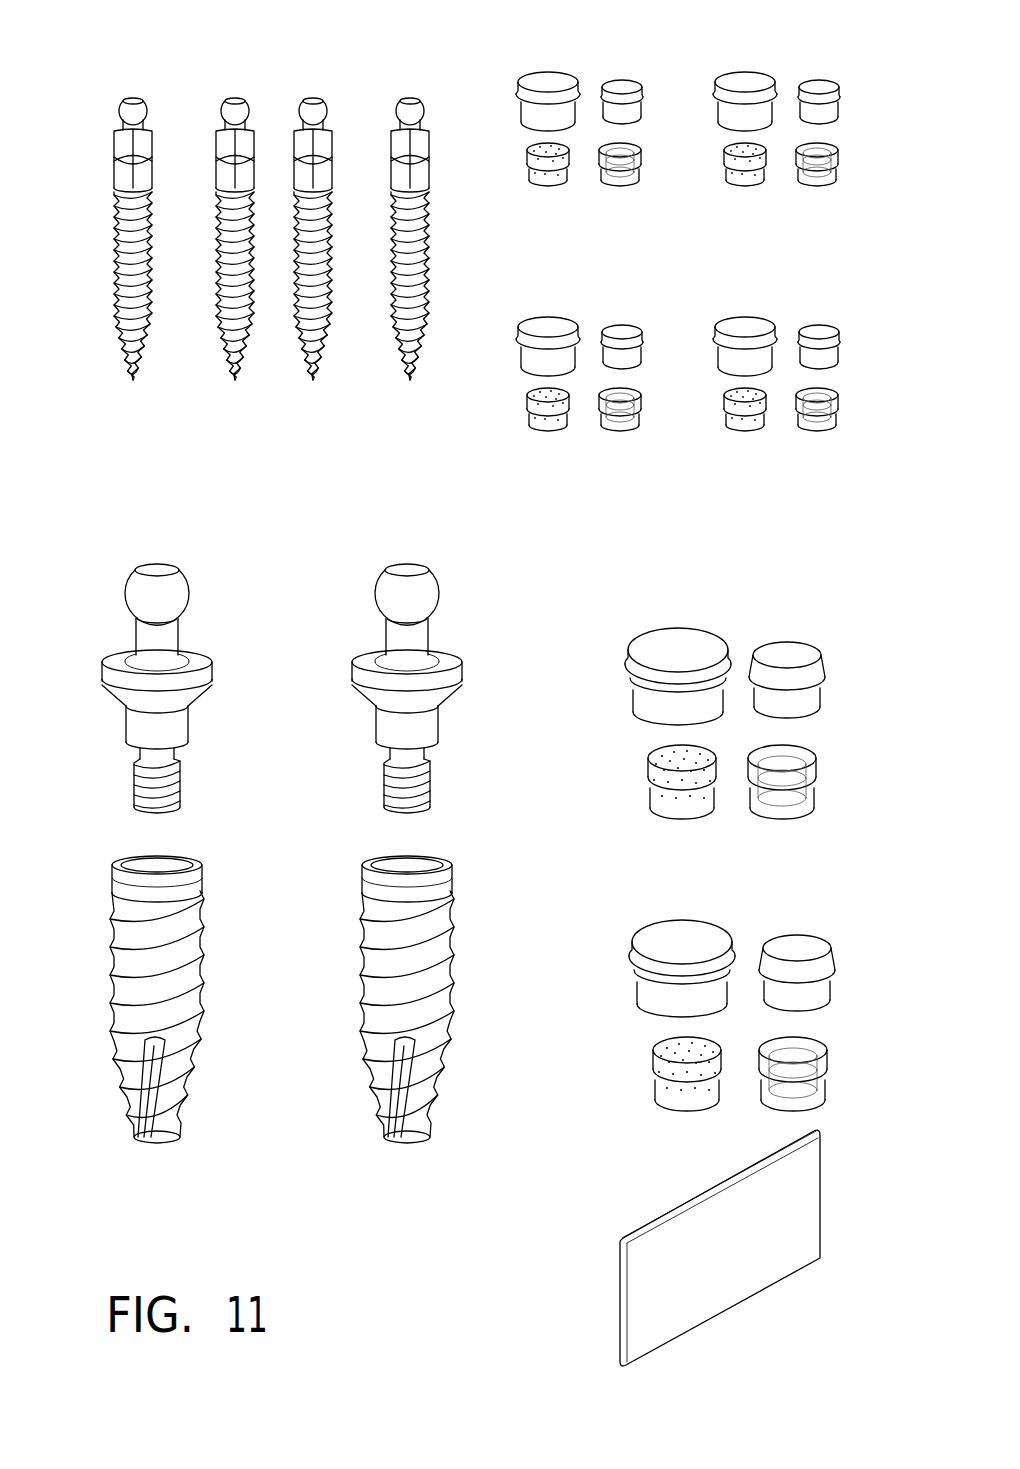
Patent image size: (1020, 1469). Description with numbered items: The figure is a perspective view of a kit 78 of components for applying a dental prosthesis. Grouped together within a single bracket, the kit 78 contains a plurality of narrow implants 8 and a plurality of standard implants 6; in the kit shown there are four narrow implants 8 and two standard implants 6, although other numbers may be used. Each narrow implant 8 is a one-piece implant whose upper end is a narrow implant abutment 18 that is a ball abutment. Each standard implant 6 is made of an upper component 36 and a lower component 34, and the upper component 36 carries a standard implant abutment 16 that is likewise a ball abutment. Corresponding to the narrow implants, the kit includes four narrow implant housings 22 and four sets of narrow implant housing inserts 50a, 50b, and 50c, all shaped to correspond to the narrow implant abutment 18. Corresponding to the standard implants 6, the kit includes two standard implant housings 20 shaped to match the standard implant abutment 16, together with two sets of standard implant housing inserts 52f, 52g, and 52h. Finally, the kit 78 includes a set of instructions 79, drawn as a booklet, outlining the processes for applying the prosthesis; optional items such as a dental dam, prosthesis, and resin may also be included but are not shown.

The narrow implant 8 is at (273, 193).
The narrow implant abutment 18 is at (128, 88).
The narrow implant housing 22 is at (548, 77).
The narrow implant housing insert 50a is at (544, 172).
The narrow implant housing insert 50b is at (625, 172).
The narrow implant housing insert 50c is at (628, 85).
The standard implant abutment 16 is at (263, 641).
The upper component 36 is at (108, 721).
The lower component 34 is at (100, 990).
The standard implant 6 is at (288, 812).
The standard implant housing 20 is at (665, 640).
The standard implant housing insert 52f is at (650, 772).
The standard implant housing insert 52g is at (808, 775).
The standard implant housing insert 52h is at (790, 650).
The kit 78 is at (898, 1370).
The set of instructions 79 is at (617, 1283).